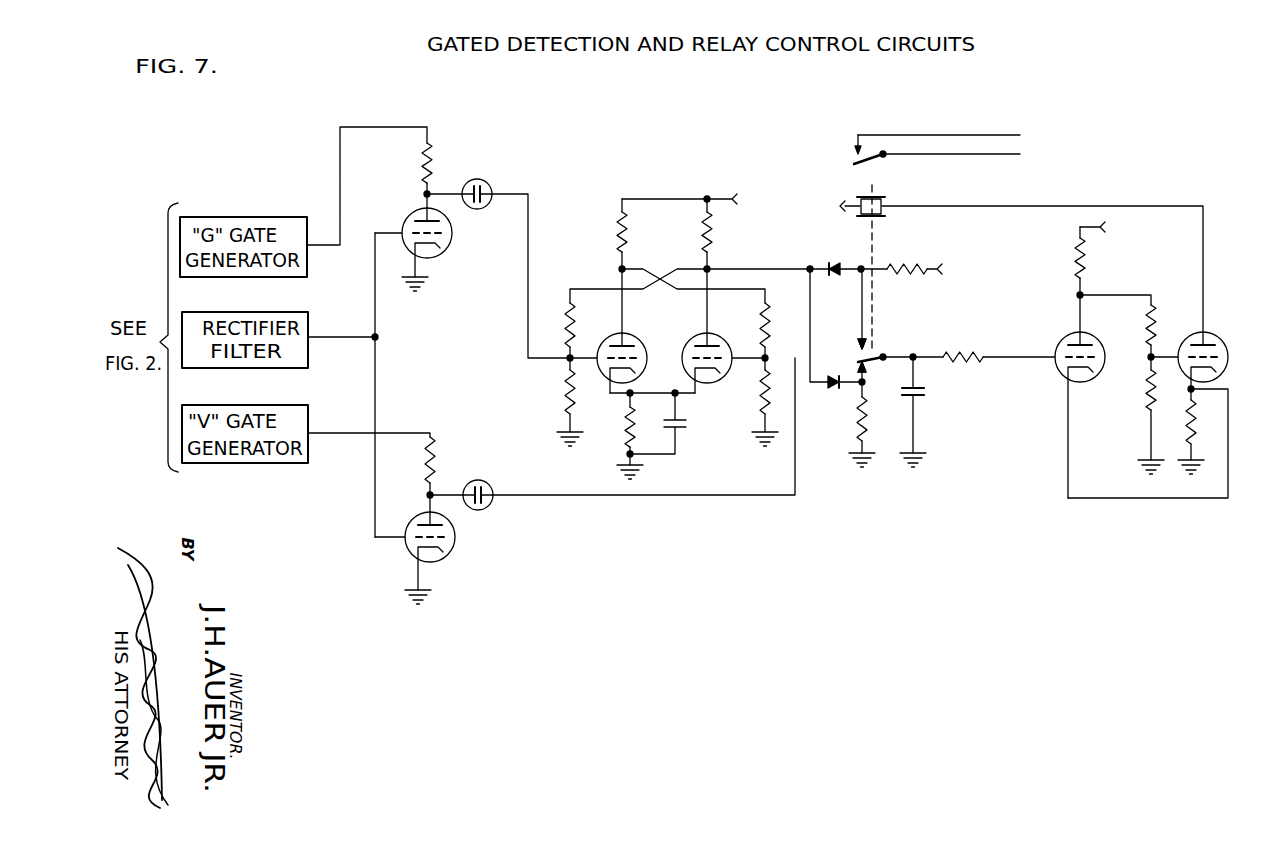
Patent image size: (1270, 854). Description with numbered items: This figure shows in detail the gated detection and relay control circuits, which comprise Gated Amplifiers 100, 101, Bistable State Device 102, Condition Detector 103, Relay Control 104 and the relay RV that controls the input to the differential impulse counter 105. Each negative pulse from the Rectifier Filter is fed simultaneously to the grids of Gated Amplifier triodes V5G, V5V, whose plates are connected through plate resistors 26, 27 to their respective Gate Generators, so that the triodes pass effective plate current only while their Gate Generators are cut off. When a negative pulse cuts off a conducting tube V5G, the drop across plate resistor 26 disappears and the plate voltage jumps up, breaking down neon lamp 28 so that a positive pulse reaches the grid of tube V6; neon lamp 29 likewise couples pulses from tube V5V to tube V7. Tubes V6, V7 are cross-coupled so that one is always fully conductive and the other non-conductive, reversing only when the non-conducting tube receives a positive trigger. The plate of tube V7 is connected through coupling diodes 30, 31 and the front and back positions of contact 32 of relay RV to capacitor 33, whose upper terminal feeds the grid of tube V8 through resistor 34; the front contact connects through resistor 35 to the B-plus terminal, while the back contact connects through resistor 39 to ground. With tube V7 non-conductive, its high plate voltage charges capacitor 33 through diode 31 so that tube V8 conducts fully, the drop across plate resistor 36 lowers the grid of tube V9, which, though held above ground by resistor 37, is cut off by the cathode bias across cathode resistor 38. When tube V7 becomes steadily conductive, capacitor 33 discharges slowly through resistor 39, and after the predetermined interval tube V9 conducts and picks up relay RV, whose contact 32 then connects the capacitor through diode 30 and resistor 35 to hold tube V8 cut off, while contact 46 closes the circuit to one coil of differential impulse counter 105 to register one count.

The plate resistor 26 is at (432, 170).
The plate resistor 27 is at (437, 462).
The neon lamp 28 is at (488, 184).
The neon lamp 29 is at (493, 490).
The coupling diode 30 is at (830, 267).
The coupling diode 31 is at (837, 378).
The contact 32 is at (880, 355).
The capacitor 33 is at (922, 397).
The resistor 34 is at (963, 354).
The resistor 35 is at (903, 262).
The plate resistor 36 is at (1087, 269).
The resistor 37 is at (1148, 390).
The cathode resistor 38 is at (1195, 421).
The resistor 39 is at (868, 415).
The contact 46 is at (873, 159).
The Gated Amplifier 100 is at (502, 623).
The Gated Amplifier 101 is at (498, 120).
The Bistable State Device 102 is at (750, 172).
The Condition Detector 103 is at (1002, 523).
The Relay Control 104 is at (1248, 523).
The Differential impulse counter 105 is at (1022, 168).
The Gated Amplifier triode V5G is at (453, 242).
The Gated Amplifier triode V5V is at (457, 543).
The tube V6 is at (641, 335).
The tube V7 is at (696, 334).
The tube V8 is at (1068, 335).
The tube V9 is at (1216, 334).
The relay RV is at (1003, 255).